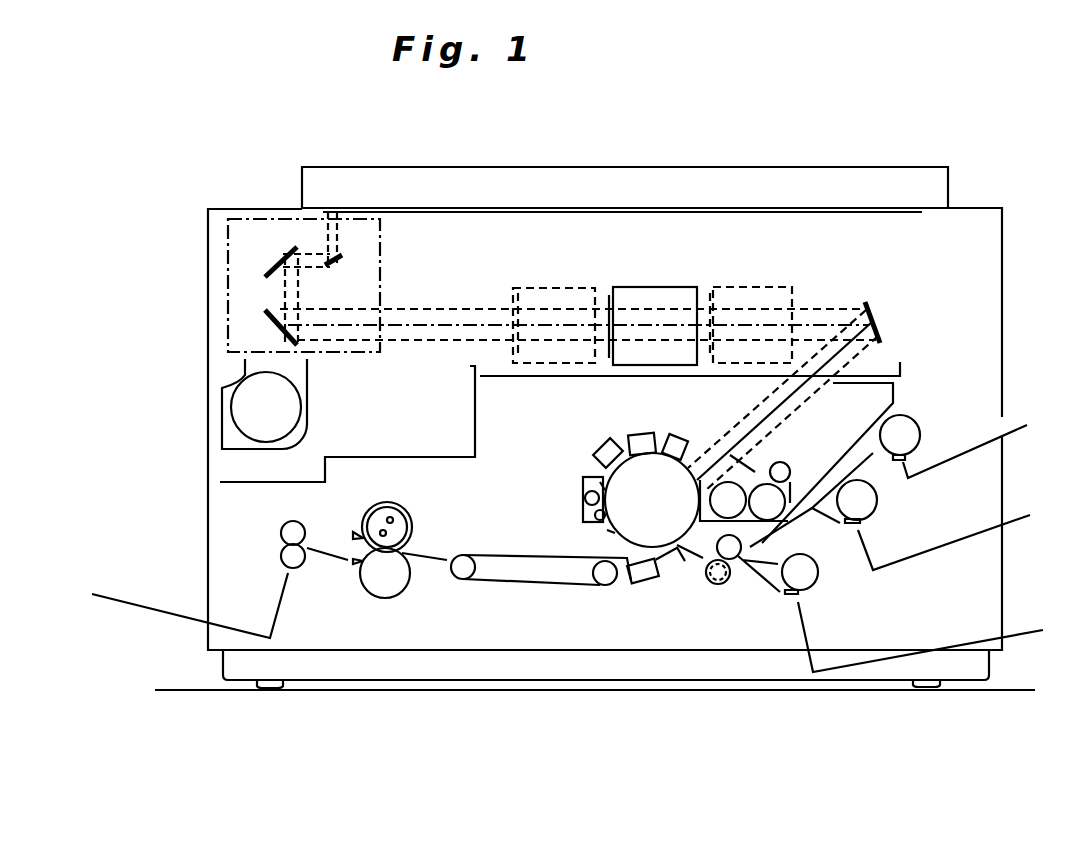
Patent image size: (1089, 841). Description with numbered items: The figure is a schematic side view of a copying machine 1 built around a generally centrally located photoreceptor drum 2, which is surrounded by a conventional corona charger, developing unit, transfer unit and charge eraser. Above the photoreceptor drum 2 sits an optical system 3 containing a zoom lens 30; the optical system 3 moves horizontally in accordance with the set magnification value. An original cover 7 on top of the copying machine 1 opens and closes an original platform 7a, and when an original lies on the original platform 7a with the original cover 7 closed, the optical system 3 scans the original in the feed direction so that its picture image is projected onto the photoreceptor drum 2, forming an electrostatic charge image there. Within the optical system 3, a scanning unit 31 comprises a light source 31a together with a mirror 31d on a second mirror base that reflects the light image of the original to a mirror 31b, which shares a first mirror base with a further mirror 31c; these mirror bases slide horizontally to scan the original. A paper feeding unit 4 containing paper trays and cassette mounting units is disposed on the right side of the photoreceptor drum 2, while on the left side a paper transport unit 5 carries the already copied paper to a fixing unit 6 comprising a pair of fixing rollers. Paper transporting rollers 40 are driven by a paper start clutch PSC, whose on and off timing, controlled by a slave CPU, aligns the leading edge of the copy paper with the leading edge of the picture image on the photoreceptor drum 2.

The copying machine 1 is at (1004, 302).
The original cover 7 is at (935, 167).
The original platform 7a is at (760, 207).
The scanning unit 31 is at (380, 233).
The light source 31a is at (317, 236).
The mirror 31b is at (267, 273).
The mirror 31c is at (267, 320).
The mirror 31d is at (578, 298).
The zoom lens 30 is at (700, 287).
The optical system 3 is at (810, 293).
The photoreceptor drum 2 is at (627, 517).
The paper transport unit 5 is at (495, 585).
The fixing unit 6 is at (367, 588).
The paper transporting rollers 40 is at (707, 557).
The paper start clutch PSC is at (730, 581).
The paper feeding unit 4 is at (978, 587).